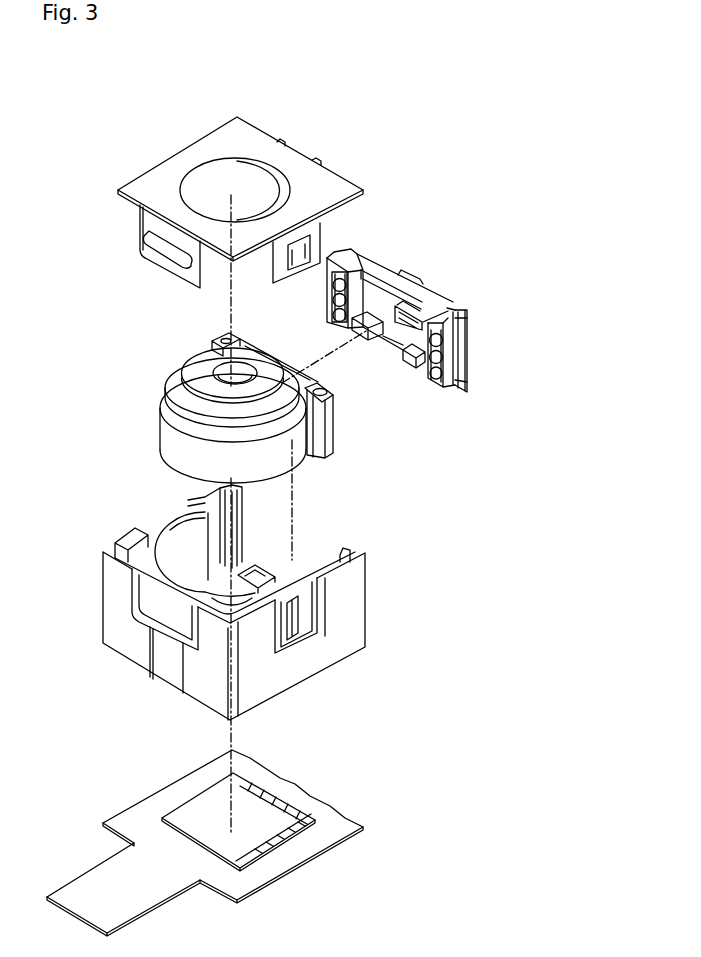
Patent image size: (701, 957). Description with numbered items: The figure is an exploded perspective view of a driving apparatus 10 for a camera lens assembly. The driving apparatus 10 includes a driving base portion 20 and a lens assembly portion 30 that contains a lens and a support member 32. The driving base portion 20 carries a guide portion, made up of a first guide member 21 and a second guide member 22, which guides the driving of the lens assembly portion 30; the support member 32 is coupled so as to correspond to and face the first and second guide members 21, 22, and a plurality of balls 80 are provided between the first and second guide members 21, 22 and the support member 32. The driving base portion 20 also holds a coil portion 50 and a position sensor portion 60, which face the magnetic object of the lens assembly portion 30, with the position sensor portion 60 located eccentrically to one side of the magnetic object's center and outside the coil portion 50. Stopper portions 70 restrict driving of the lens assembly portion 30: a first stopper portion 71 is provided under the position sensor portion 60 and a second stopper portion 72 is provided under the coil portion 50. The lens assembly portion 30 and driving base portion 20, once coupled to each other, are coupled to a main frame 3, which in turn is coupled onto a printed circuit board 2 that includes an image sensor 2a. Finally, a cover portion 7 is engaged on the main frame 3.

The driving apparatus 10 is at (458, 88).
The cover portion 7 is at (182, 160).
The driving base portion 20 is at (432, 347).
The first guide member 21 is at (360, 280).
The second guide member 22 is at (462, 340).
The coil portion 50 is at (412, 306).
The position sensor portion 60 is at (370, 303).
The stopper portions 70 is at (388, 389).
The first stopper portion 71 is at (370, 342).
The second stopper portion 72 is at (411, 363).
The balls 80 is at (436, 374).
The lens assembly portion 30 is at (218, 423).
The support member 32 is at (328, 456).
The main frame 3 is at (92, 598).
The printed circuit board 2 is at (205, 843).
The image sensor 2a is at (268, 812).